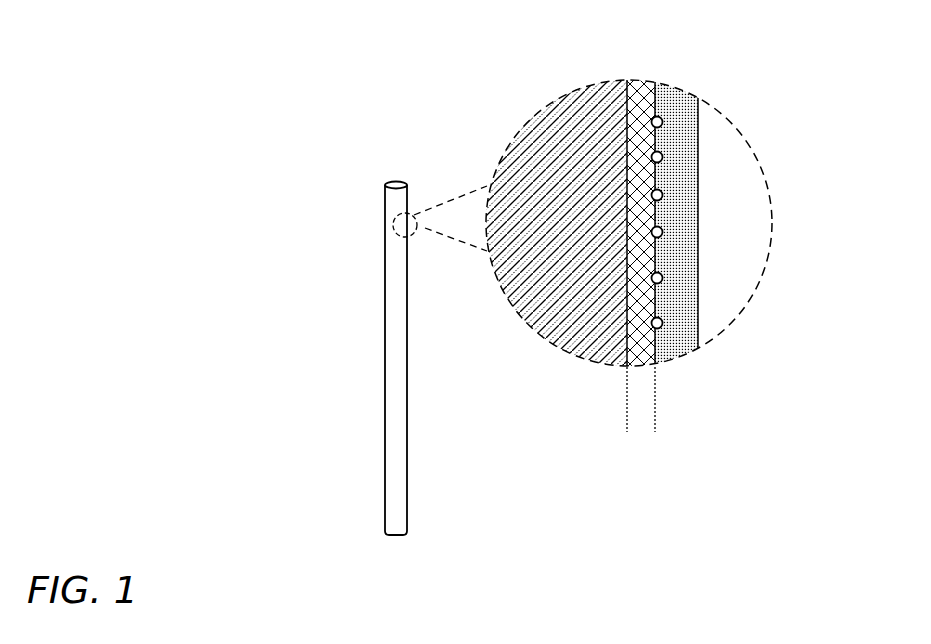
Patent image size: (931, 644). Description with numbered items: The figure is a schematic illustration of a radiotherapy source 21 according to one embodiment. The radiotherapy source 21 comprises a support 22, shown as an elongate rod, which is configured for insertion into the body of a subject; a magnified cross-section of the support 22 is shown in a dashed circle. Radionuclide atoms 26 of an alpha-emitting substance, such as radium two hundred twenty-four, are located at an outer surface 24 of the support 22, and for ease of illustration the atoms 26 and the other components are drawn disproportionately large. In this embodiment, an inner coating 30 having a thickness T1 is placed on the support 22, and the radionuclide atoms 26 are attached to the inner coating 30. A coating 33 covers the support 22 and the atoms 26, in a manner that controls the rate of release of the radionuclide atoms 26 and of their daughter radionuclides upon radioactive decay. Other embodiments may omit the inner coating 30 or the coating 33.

The radiotherapy source 21 is at (300, 200).
The support 22 is at (592, 192).
The outer surface 24 is at (627, 100).
The radionuclide atoms 26 is at (650, 125).
The inner coating 30 is at (657, 100).
The coating 33 is at (697, 224).
The thickness T1 is at (687, 423).